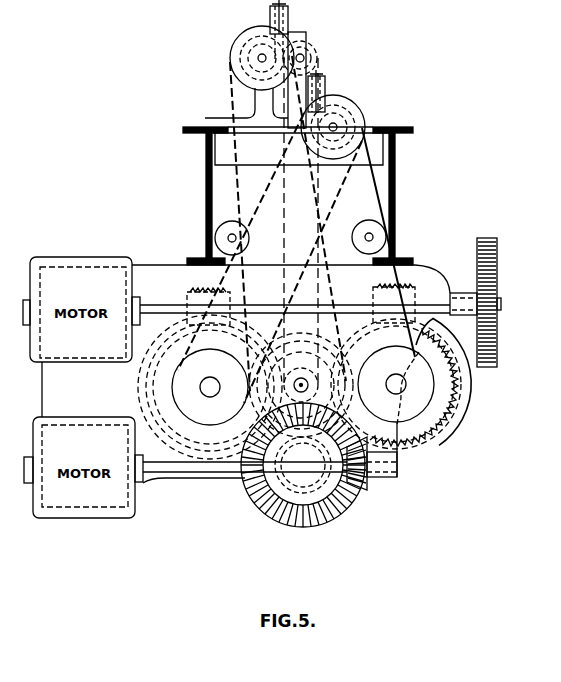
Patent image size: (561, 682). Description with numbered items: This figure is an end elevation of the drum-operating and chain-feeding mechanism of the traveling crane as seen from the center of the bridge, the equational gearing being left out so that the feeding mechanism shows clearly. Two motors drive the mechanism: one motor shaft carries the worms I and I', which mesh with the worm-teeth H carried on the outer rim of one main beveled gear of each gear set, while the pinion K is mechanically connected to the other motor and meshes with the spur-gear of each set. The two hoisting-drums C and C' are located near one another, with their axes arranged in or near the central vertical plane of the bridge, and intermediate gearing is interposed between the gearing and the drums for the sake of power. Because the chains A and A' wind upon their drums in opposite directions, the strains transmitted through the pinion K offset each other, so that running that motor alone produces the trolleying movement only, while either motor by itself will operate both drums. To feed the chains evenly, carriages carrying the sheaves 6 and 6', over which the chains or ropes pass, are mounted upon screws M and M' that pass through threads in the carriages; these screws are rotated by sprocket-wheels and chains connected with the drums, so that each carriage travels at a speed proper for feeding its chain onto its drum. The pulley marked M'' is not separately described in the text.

The sheave 6' is at (294, 30).
The sheave 6 is at (329, 91).
The screw M' is at (241, 58).
The screw M is at (303, 98).
The pulley M'' is at (359, 122).
The chain A' is at (288, 223).
The chain A is at (270, 258).
The worm I is at (192, 303).
The worm I' is at (409, 288).
The hoisting-drum C' is at (193, 387).
The worm-teeth H is at (148, 395).
The pinion K is at (312, 372).
The hoisting-drum C is at (427, 383).